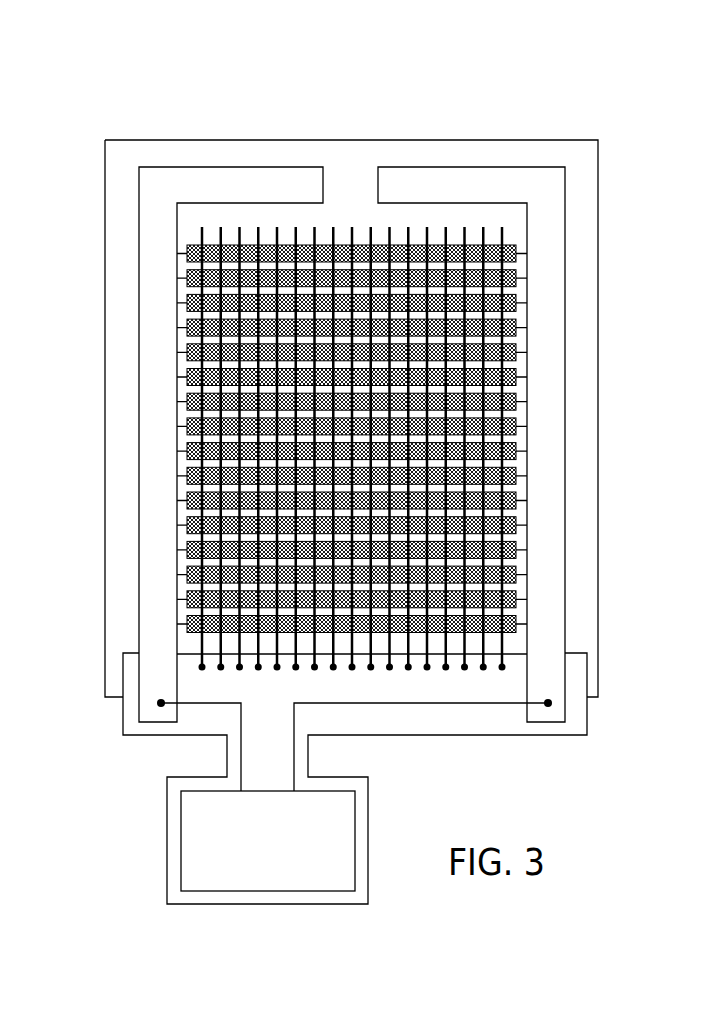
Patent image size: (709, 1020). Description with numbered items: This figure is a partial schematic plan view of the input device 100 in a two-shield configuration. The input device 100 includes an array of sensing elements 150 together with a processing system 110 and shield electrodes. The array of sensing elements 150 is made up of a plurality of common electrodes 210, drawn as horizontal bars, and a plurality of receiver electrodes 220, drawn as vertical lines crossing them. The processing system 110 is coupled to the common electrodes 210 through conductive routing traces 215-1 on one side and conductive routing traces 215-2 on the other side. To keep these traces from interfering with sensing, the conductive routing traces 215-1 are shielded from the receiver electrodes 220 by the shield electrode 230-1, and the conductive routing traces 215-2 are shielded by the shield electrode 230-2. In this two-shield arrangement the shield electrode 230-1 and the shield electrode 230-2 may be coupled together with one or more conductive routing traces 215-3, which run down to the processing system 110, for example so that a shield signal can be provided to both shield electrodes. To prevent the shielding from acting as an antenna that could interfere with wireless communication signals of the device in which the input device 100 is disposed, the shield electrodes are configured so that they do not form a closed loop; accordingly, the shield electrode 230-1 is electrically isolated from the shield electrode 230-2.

The input device 100 is at (134, 104).
The processing system 110 is at (249, 879).
The array of sensing elements 150 is at (350, 172).
The common electrodes 210 is at (180, 515).
The conductive routing traces 215-1 is at (178, 392).
The conductive routing traces 215-2 is at (527, 344).
The conductive routing traces 215-3 is at (227, 755).
The receiver electrodes 220 is at (483, 227).
The shield electrode 230-1 is at (147, 167).
The shield electrode 230-2 is at (553, 166).